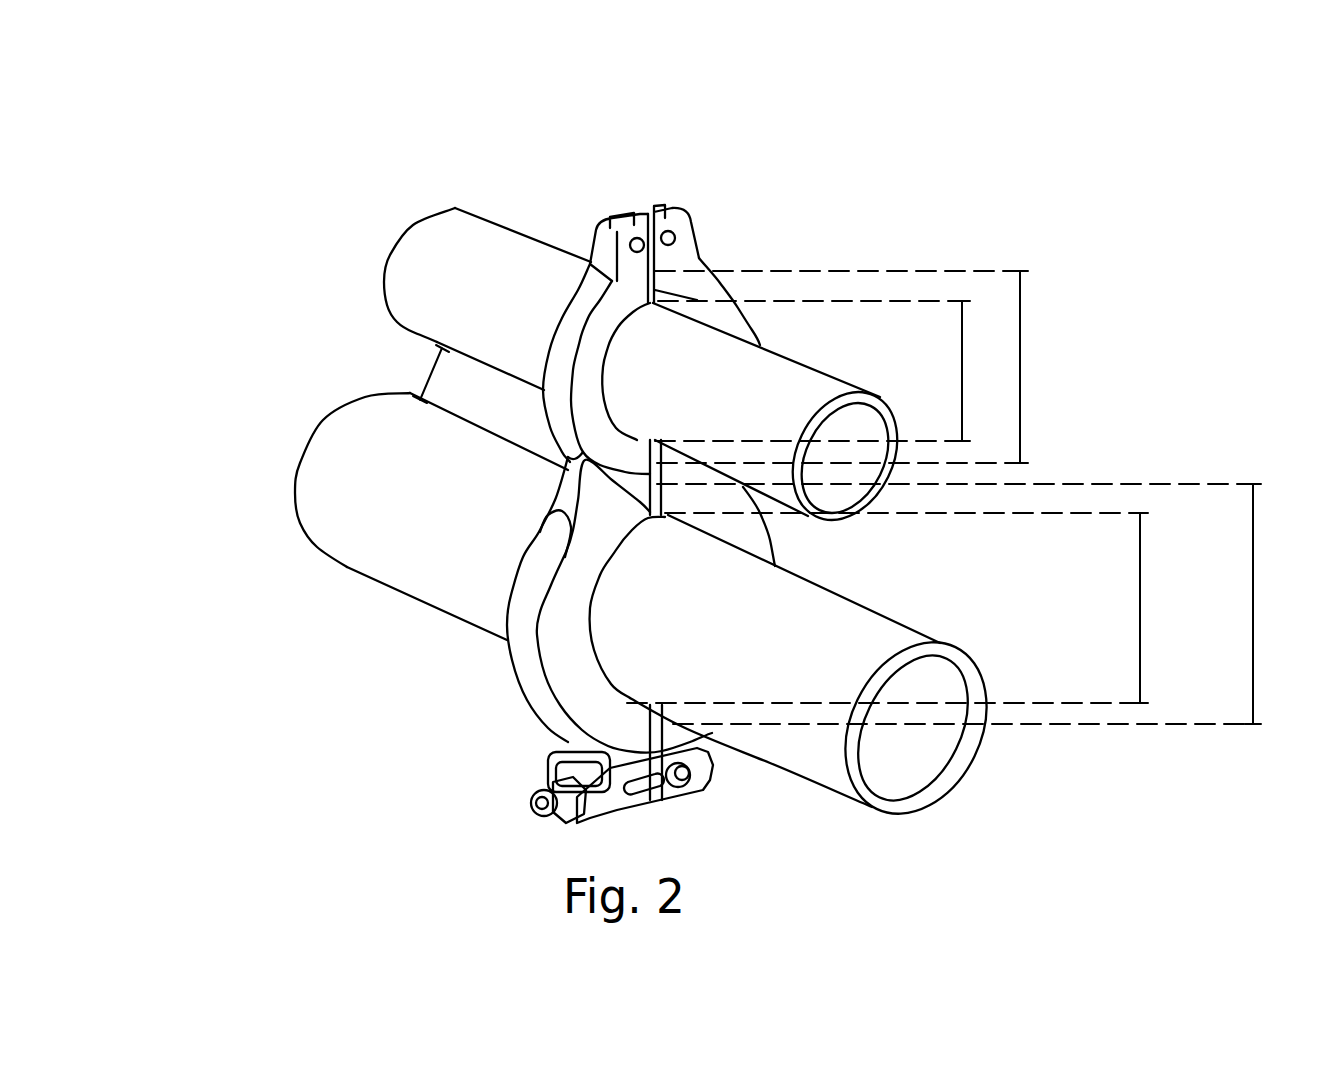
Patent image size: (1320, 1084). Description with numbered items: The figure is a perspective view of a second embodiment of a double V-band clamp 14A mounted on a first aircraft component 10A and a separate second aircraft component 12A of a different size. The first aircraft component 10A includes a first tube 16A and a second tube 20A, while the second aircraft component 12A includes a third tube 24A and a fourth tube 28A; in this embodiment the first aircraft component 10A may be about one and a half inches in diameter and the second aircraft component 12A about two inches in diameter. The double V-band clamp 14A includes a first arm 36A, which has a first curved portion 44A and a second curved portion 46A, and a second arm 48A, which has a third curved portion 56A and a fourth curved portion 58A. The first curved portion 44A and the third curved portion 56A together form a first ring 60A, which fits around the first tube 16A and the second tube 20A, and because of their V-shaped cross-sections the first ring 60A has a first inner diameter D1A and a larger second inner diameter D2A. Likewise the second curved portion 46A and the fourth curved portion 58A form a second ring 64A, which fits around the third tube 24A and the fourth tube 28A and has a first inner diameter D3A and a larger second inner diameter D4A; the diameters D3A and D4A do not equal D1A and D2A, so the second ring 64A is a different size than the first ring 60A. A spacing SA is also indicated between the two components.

The first aircraft component 10A is at (350, 222).
The second aircraft component 12A is at (265, 460).
The double V-band clamp 14A is at (612, 165).
The first tube 16A is at (453, 226).
The second tube 20A is at (797, 392).
The third tube 24A is at (333, 523).
The fourth tube 28A is at (933, 768).
The first arm 36A is at (574, 283).
The first curved portion 44A is at (559, 388).
The second curved portion 46A is at (528, 647).
The second arm 48A is at (700, 265).
The third curved portion 56A is at (723, 312).
The fourth curved portion 58A is at (758, 537).
The first ring 60A is at (595, 341).
The second ring 64A is at (565, 685).
The pipe spacing SA is at (419, 374).
The first inner diameter D1A is at (812, 371).
The second inner diameter D2A is at (863, 367).
The first inner diameter D3A is at (887, 608).
The second inner diameter D4A is at (959, 604).